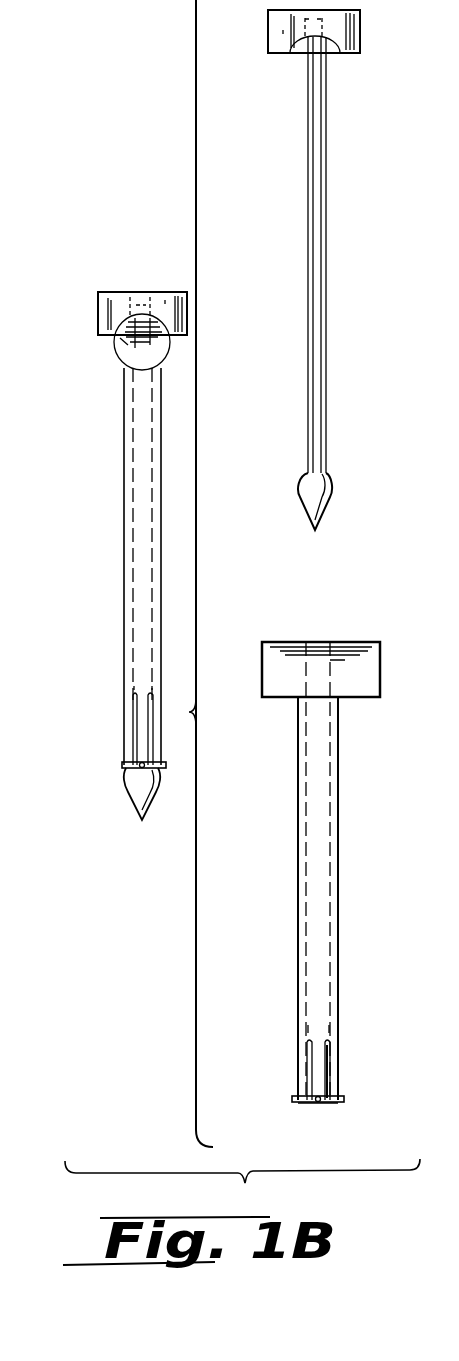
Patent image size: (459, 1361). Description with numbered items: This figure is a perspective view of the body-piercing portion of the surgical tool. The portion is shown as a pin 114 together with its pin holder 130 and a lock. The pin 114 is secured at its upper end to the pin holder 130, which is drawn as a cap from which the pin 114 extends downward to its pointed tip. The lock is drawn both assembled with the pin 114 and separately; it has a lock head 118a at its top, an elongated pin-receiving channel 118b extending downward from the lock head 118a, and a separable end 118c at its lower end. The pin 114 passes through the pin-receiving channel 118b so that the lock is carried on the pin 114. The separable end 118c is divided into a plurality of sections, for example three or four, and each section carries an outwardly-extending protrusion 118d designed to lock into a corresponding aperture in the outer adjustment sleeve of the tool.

The pin holder 130 is at (268, 40).
The pin 114 is at (308, 148).
The lock head 118a is at (115, 355).
The pin-receiving channel 118b is at (124, 414).
The separable end 118c is at (125, 730).
The outwardly-extending protrusion 118d is at (122, 765).